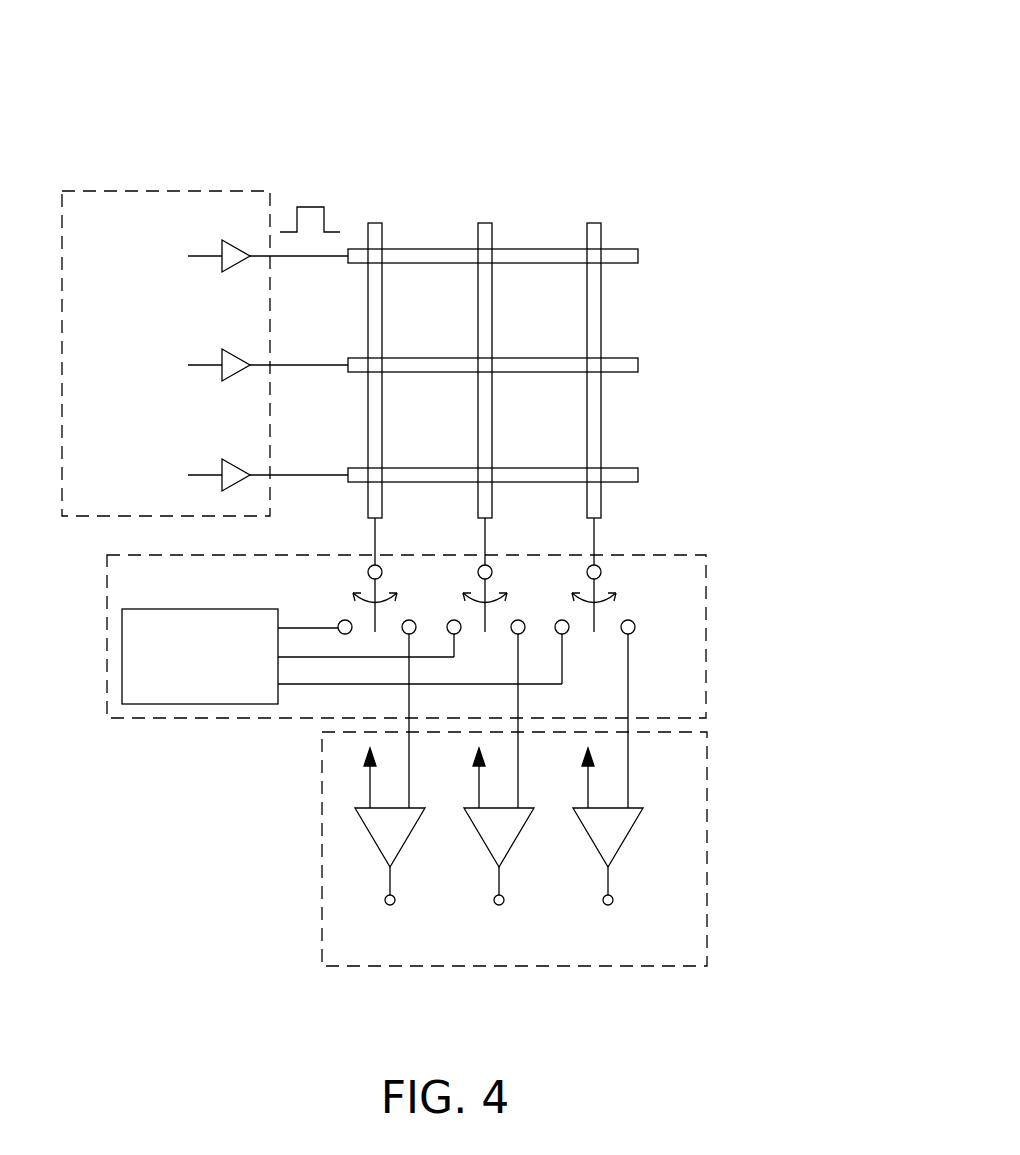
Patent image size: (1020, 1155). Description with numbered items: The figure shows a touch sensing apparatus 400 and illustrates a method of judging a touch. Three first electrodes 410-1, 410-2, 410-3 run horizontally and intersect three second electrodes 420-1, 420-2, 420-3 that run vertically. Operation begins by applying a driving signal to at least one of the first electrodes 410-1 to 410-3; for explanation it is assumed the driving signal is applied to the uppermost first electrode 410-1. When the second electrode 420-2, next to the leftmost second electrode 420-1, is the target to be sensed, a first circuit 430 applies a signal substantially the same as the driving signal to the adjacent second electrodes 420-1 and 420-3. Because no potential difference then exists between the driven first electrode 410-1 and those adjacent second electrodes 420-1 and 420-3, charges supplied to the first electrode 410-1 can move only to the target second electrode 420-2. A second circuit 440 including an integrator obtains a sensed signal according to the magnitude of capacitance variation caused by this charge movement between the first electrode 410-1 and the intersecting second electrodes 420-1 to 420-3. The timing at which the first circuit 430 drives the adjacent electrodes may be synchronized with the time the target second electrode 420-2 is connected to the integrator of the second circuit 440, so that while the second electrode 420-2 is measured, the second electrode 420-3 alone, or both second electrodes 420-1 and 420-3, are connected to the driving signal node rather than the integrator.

The touch sensing device 400 is at (715, 125).
The first electrode 410-1 is at (640, 257).
The first electrode 410-2 is at (640, 366).
The first electrode 410-3 is at (640, 476).
The second electrode 420-1 is at (375, 222).
The target second electrode 420-2 is at (485, 222).
The second electrode 420-3 is at (594, 222).
The first circuit 430 is at (708, 632).
The second circuit 440 is at (708, 838).